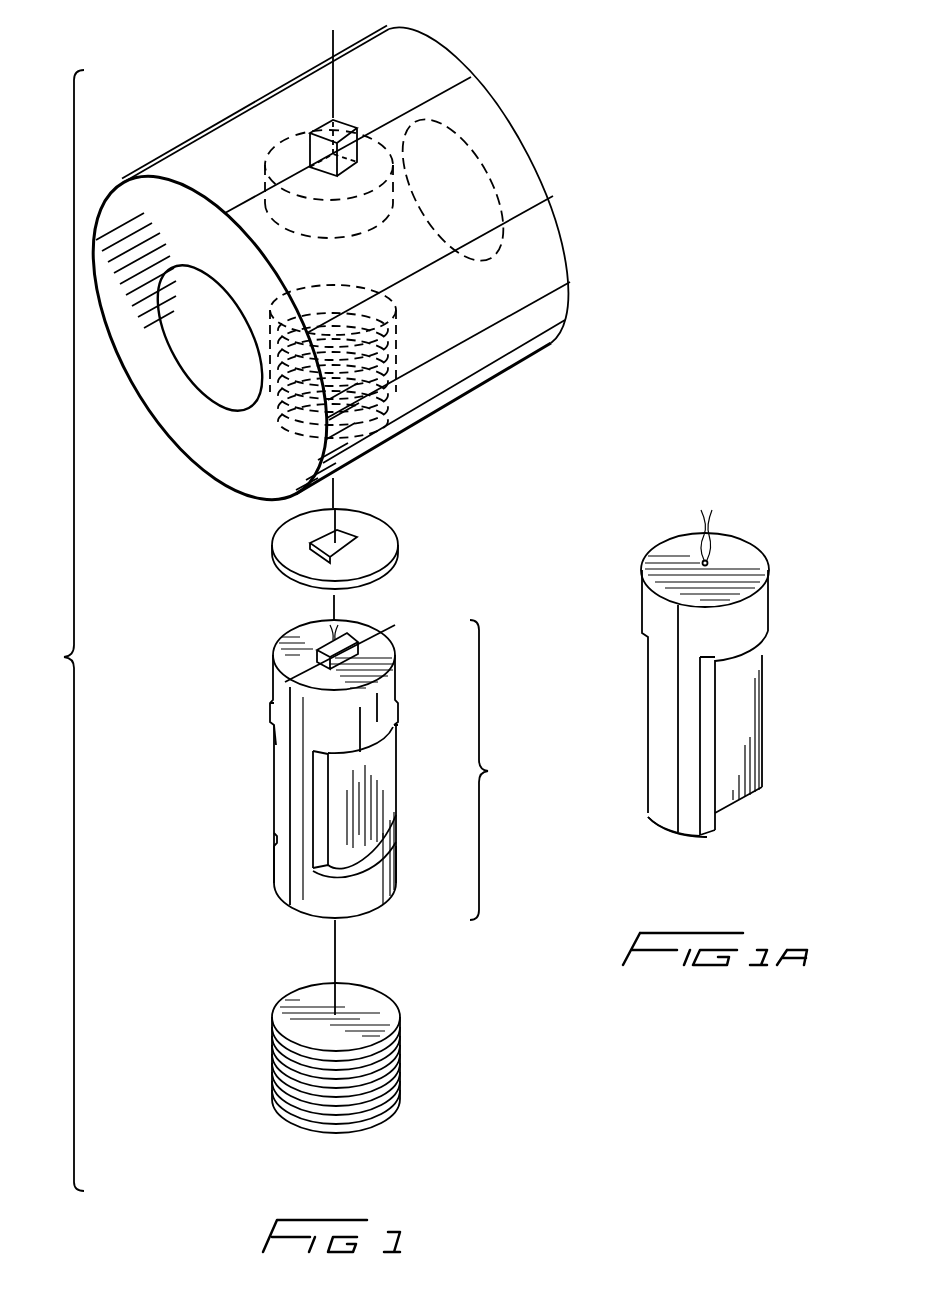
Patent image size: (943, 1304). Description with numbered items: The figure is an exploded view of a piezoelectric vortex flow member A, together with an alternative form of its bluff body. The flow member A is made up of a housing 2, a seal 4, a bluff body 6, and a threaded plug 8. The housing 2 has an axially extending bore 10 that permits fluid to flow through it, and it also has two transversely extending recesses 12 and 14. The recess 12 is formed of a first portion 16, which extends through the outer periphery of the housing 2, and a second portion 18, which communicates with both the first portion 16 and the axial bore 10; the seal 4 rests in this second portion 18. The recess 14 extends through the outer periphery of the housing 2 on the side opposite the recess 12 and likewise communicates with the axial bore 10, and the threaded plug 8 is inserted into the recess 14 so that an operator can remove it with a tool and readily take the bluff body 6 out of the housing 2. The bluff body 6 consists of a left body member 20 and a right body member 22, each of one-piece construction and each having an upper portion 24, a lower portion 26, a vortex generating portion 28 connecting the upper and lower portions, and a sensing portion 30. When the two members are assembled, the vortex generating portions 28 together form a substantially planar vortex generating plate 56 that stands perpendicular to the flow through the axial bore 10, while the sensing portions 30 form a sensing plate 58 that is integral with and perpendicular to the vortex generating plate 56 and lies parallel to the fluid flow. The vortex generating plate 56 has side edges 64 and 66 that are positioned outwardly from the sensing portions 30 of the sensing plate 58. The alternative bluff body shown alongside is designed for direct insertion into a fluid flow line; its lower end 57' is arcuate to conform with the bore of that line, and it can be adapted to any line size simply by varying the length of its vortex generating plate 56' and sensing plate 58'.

In FIG. 1, the housing 2 is at (364, 57).
In FIG. 1, the seal 4 is at (388, 535).
In FIG. 1, the bluff body 6 is at (489, 770).
In FIG. 1, the threaded plug 8 is at (373, 1005).
In FIG. 1, the axially extending bore 10 is at (178, 346).
In FIG. 1, the recess 12 is at (374, 112).
In FIG. 1, the recess 14 is at (402, 344).
In FIG. 1, the first portion 16 is at (322, 128).
In FIG. 1, the second portion 18 is at (353, 220).
In FIG. 1, the left body member 20 is at (277, 614).
In FIG. 1, the right body member 22 is at (406, 671).
In FIG. 1, the upper portion 24 is at (275, 685).
In FIG. 1, the lower portion 26 is at (277, 870).
In FIG. 1, the vortex generating portion 28 is at (309, 752).
In FIG. 1, the sensing portion 30 is at (362, 786).
In FIG. 1, the vortex generating plate 56 is at (221, 800).
In FIG. 1, the sensing plate 58 is at (393, 743).
In FIG. 1, the side edge 64 is at (276, 733).
In FIG. 1, the side edge 66 is at (322, 828).
In FIG. 1, the piezoelectric vortex flow member A is at (60, 630).
In FIG. 1A, the vortex generating plate 56' is at (677, 673).
In FIG. 1A, the lower end 57' is at (643, 836).
In FIG. 1A, the sensing plate 58' is at (761, 733).